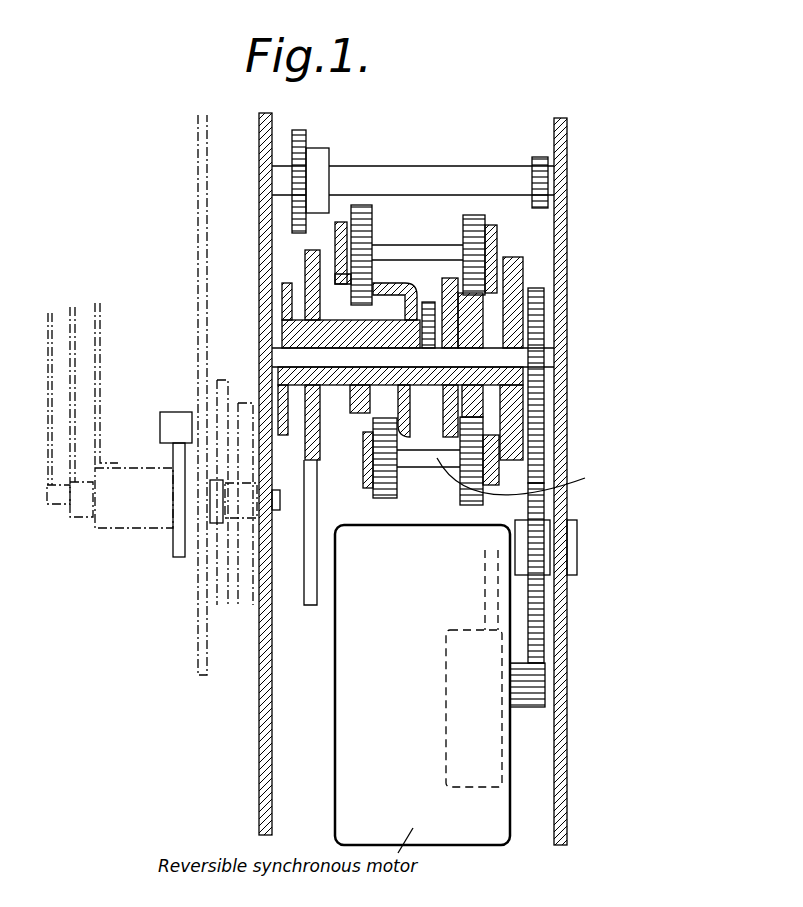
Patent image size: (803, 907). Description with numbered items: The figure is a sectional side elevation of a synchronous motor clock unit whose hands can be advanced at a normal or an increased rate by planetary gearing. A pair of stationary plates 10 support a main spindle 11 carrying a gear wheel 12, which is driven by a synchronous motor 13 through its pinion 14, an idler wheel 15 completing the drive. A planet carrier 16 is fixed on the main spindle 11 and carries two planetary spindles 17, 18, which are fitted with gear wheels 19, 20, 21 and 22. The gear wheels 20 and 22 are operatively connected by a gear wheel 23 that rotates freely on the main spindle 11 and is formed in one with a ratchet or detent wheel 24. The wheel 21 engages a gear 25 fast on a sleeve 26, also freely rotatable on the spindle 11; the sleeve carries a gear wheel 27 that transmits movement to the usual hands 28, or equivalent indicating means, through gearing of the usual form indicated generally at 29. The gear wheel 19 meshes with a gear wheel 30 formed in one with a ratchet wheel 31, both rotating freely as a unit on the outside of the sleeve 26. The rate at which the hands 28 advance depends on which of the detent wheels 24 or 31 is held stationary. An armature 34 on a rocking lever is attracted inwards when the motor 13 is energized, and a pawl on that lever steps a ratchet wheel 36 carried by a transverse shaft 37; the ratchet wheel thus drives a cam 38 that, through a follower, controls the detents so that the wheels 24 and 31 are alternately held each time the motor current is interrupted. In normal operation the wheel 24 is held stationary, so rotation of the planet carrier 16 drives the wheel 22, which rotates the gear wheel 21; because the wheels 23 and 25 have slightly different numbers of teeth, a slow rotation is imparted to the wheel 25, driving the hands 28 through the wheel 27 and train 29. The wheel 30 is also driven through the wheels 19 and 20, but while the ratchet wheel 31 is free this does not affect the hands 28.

The stationary plates 10 is at (259, 803).
The main spindle 11 is at (513, 362).
The gear wheel 12 is at (547, 420).
The synchronous motor 13 is at (460, 833).
The pinion 14 is at (538, 682).
The idler wheel 15 is at (534, 598).
The planet carrier 16 is at (443, 337).
The planetary spindle 17 is at (403, 245).
The planetary spindle 18 is at (523, 475).
The gear wheel 19 is at (362, 213).
The gear wheel 20 is at (480, 220).
The gear wheel 21 is at (382, 500).
The gear wheel 22 is at (466, 506).
The gear wheel 23 is at (483, 407).
The ratchet or detent wheel 24 is at (520, 273).
The gear 25 is at (400, 468).
The sleeve 26 is at (343, 372).
The gear wheel 27 is at (282, 400).
The hands 28 is at (50, 340).
The gearing 29 is at (217, 508).
The gear wheel 30 is at (300, 318).
The ratchet wheel 31 is at (312, 272).
The armature 34 is at (490, 747).
The ratchet wheel 36 is at (553, 150).
The transverse shaft 37 is at (438, 178).
The cam 38 is at (307, 148).